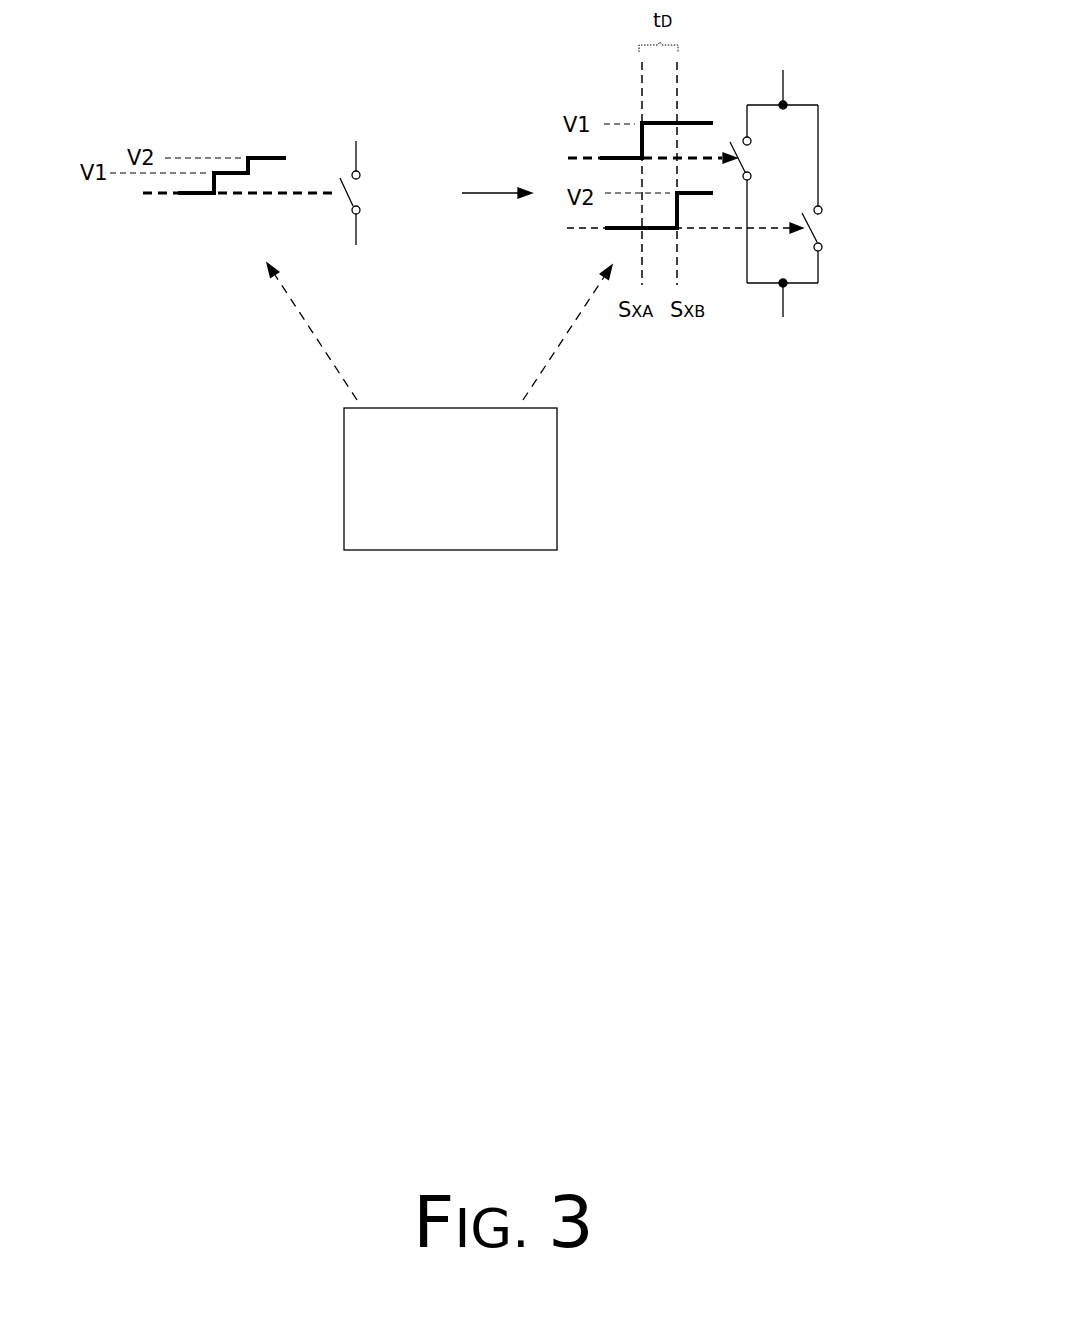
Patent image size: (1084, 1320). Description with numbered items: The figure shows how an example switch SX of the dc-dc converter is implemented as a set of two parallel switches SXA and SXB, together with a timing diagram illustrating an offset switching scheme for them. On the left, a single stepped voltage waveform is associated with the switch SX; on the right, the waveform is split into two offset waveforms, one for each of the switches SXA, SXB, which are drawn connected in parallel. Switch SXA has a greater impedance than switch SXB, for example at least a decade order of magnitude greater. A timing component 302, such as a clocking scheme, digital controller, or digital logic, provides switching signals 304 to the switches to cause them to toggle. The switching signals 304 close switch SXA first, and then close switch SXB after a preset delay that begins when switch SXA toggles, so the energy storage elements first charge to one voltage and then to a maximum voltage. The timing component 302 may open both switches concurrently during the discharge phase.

The timing component 302 is at (432, 520).
The switching signals 304 is at (439, 331).
The switch SX is at (365, 193).
The switch SXA is at (759, 158).
The switch SXB is at (832, 228).